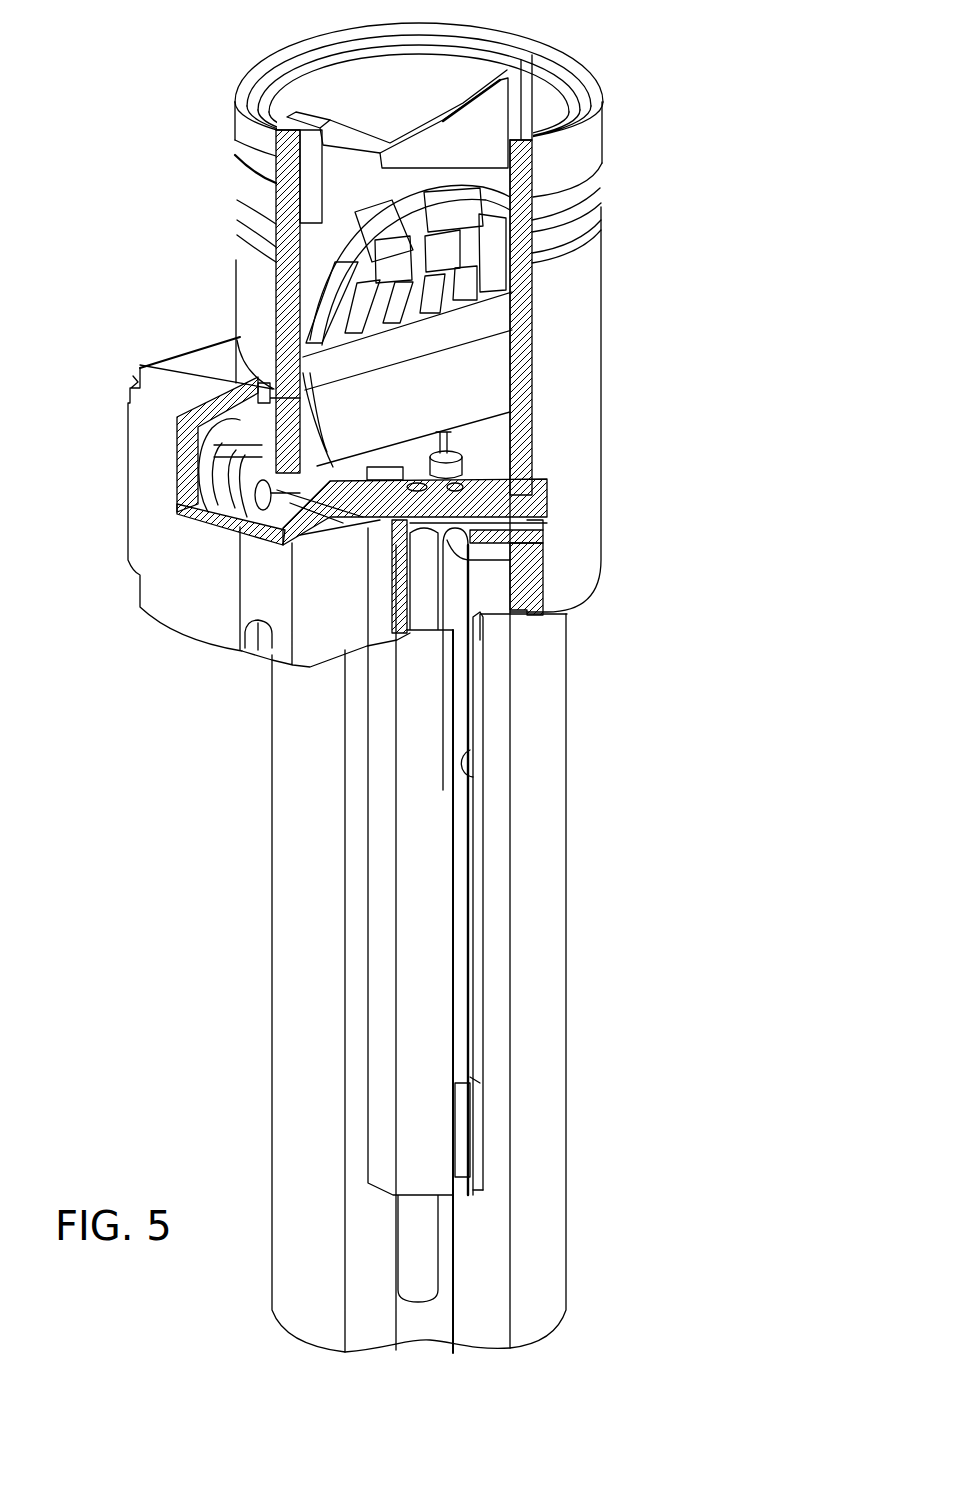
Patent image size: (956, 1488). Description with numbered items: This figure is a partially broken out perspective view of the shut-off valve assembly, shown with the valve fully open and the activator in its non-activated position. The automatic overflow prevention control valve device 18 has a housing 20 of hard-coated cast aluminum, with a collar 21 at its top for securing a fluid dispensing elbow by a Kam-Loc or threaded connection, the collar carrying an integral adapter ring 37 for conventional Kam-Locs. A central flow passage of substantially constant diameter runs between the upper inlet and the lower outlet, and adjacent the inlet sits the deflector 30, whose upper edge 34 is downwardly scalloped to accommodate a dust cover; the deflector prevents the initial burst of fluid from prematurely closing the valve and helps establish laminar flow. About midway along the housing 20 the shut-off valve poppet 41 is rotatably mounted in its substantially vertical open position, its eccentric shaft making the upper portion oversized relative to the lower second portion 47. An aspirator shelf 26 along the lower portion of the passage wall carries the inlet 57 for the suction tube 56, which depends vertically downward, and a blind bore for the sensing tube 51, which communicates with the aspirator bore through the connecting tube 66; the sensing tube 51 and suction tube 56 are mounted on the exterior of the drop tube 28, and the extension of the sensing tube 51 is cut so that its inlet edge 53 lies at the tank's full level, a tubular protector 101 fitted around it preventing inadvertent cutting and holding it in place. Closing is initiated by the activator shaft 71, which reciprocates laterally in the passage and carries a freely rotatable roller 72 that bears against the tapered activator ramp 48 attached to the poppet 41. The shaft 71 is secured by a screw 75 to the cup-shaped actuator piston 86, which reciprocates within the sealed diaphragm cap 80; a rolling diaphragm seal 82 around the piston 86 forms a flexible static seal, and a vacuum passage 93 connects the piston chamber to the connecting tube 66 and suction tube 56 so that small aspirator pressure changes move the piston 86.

The fluid flow operated control valve device 18 is at (637, 250).
The housing 20 is at (580, 365).
The collar 21 is at (258, 208).
The aspirator shelf 26 is at (282, 530).
The drop tube 28 is at (547, 1017).
The deflector 30 is at (497, 133).
The upper edge of deflector 34 is at (470, 45).
The adapter ring 37 is at (563, 200).
The shut-off valve poppet 41 is at (417, 243).
The second portion of poppet 47 is at (427, 390).
The activator ramp 48 is at (395, 517).
The sensing tube 51 is at (473, 777).
The inlet edge of sensing tube 53 is at (463, 1083).
The suction tube 56 is at (422, 597).
The inlet for suction tube 57 is at (480, 495).
The connecting tube 66 is at (527, 560).
The activator shaft 71 is at (500, 427).
The roller 72 is at (457, 468).
The screw 75 is at (233, 517).
The diaphragm cap 80 is at (190, 373).
The rolling diaphragm seal 82 is at (195, 447).
The actuator piston 86 is at (223, 423).
The vacuum passage 93 is at (398, 545).
The protector 101 is at (438, 910).